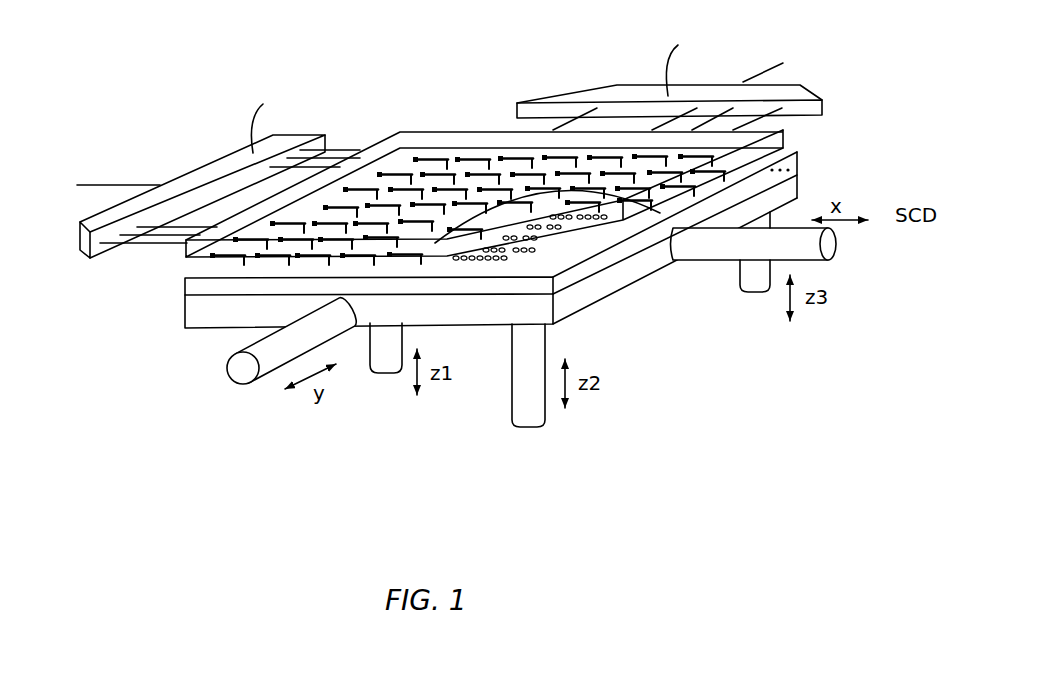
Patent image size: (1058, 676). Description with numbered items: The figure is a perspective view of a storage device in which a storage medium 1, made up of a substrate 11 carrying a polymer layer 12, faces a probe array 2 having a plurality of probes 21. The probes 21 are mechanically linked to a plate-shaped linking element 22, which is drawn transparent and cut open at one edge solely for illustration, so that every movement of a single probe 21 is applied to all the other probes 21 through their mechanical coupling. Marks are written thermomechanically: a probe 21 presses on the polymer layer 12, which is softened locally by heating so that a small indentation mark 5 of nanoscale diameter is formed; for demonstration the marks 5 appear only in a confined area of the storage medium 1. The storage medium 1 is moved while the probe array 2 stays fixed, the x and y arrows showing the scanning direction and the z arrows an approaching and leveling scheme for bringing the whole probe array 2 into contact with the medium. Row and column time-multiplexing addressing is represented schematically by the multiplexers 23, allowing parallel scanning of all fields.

The storage medium 1 is at (801, 153).
The probe array 2 is at (467, 146).
The indentation mark 5 is at (535, 253).
The substrate 11 is at (203, 330).
The polymer layer 12 is at (176, 288).
The probe 21 is at (480, 172).
The linking element 22 is at (787, 146).
The multiplexer 23 is at (213, 162).